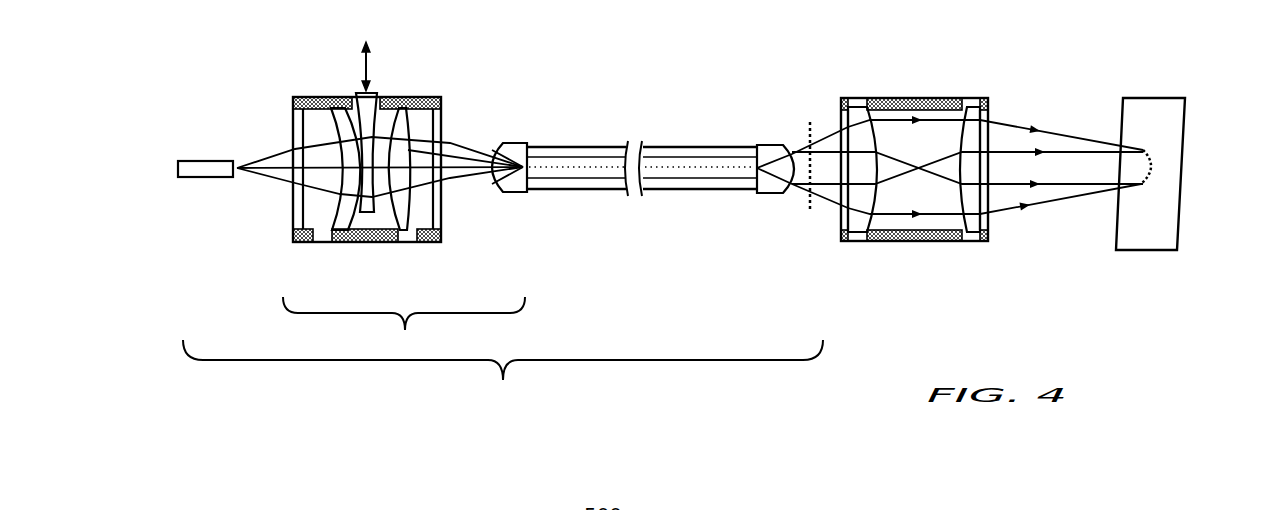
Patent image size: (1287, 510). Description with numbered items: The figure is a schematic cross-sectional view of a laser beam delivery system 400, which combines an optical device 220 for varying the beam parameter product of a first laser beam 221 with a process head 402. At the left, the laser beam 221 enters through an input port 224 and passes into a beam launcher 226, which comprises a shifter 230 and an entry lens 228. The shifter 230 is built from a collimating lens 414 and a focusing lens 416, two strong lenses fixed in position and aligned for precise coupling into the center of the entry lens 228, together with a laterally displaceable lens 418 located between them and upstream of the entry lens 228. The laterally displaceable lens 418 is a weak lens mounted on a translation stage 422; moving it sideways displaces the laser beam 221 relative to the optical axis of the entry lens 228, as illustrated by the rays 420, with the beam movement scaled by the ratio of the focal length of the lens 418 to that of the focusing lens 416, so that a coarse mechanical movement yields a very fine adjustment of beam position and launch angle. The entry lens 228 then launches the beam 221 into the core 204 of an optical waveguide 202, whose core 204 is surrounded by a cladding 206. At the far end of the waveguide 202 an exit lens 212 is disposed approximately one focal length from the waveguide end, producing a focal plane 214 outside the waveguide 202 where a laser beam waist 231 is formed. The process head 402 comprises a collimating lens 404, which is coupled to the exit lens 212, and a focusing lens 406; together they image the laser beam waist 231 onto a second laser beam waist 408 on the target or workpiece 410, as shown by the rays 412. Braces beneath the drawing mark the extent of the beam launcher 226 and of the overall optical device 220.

The laser beam delivery system 400 is at (763, 43).
The input port 224 is at (203, 172).
The shifter 230 is at (363, 250).
The collimating lens 414 is at (318, 222).
The laterally displaceable lens 418 is at (363, 122).
The focusing lens 416 is at (417, 222).
The translation stage 422 is at (368, 70).
The rays 420 is at (360, 167).
The first laser beam 221 is at (465, 169).
The entry lens 228 is at (512, 194).
The optical waveguide 202 is at (621, 130).
The core 204 is at (603, 165).
The cladding 206 is at (687, 150).
The exit lens 212 is at (763, 192).
The focal plane 214 is at (812, 213).
The laser beam waist 231 is at (808, 152).
The rays 412 is at (1048, 136).
The process head 402 is at (917, 257).
The collimating lens 404 is at (857, 117).
The focusing lens 406 is at (967, 117).
The target 410 is at (1155, 242).
The second laser beam waist 408 is at (1150, 163).
The beam launcher 226 is at (404, 328).
The optical device 220 is at (503, 378).